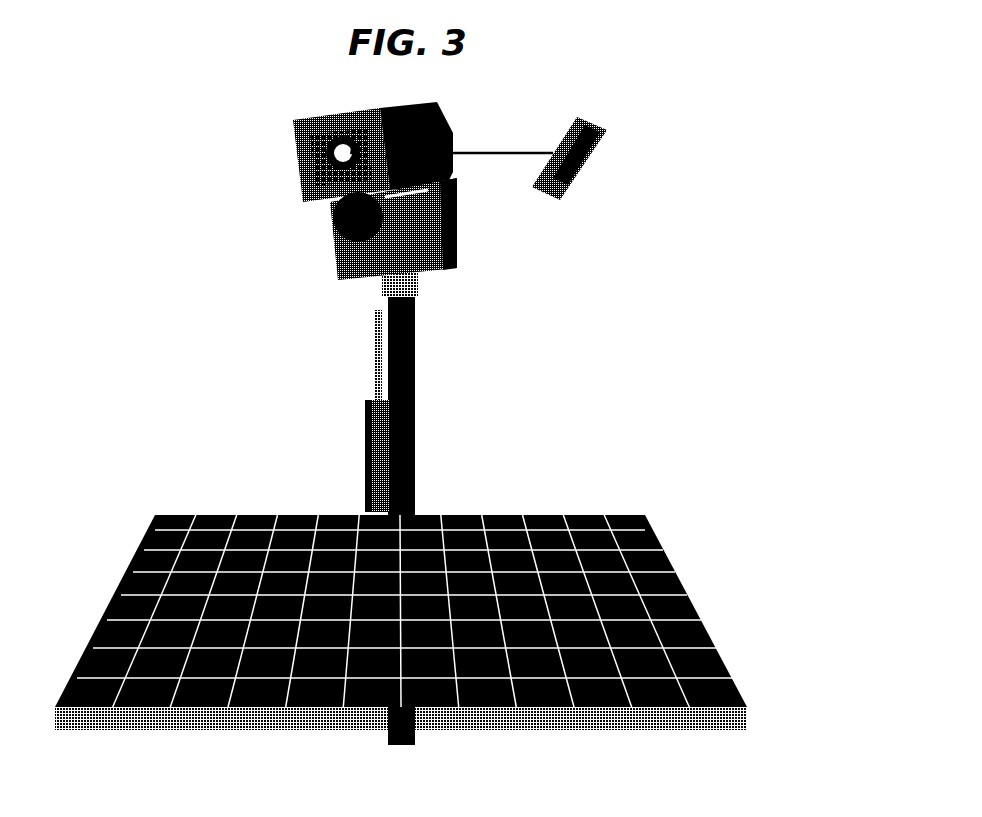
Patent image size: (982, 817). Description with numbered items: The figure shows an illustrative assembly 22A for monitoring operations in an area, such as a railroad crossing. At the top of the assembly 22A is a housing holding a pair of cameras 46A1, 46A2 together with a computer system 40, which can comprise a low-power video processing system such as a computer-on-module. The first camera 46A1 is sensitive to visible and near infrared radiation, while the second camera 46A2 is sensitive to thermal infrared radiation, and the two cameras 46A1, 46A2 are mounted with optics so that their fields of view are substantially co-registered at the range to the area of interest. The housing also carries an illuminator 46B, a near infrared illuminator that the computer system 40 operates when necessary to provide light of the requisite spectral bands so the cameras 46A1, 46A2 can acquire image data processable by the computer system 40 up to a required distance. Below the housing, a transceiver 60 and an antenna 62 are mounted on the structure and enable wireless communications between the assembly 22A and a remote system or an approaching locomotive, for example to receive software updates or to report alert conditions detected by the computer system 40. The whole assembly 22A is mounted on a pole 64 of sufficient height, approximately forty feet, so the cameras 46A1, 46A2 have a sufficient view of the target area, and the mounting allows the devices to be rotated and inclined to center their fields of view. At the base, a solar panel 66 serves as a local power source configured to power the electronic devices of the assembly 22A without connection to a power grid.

The assembly 22A is at (115, 140).
The computer system 40 is at (596, 120).
The camera 46A1 is at (327, 163).
The camera 46A2 is at (357, 143).
The illuminator 46B is at (333, 223).
The transceiver 60 is at (416, 378).
The antenna 62 is at (373, 323).
The pole 64 is at (366, 440).
The solar panel 66 is at (100, 623).